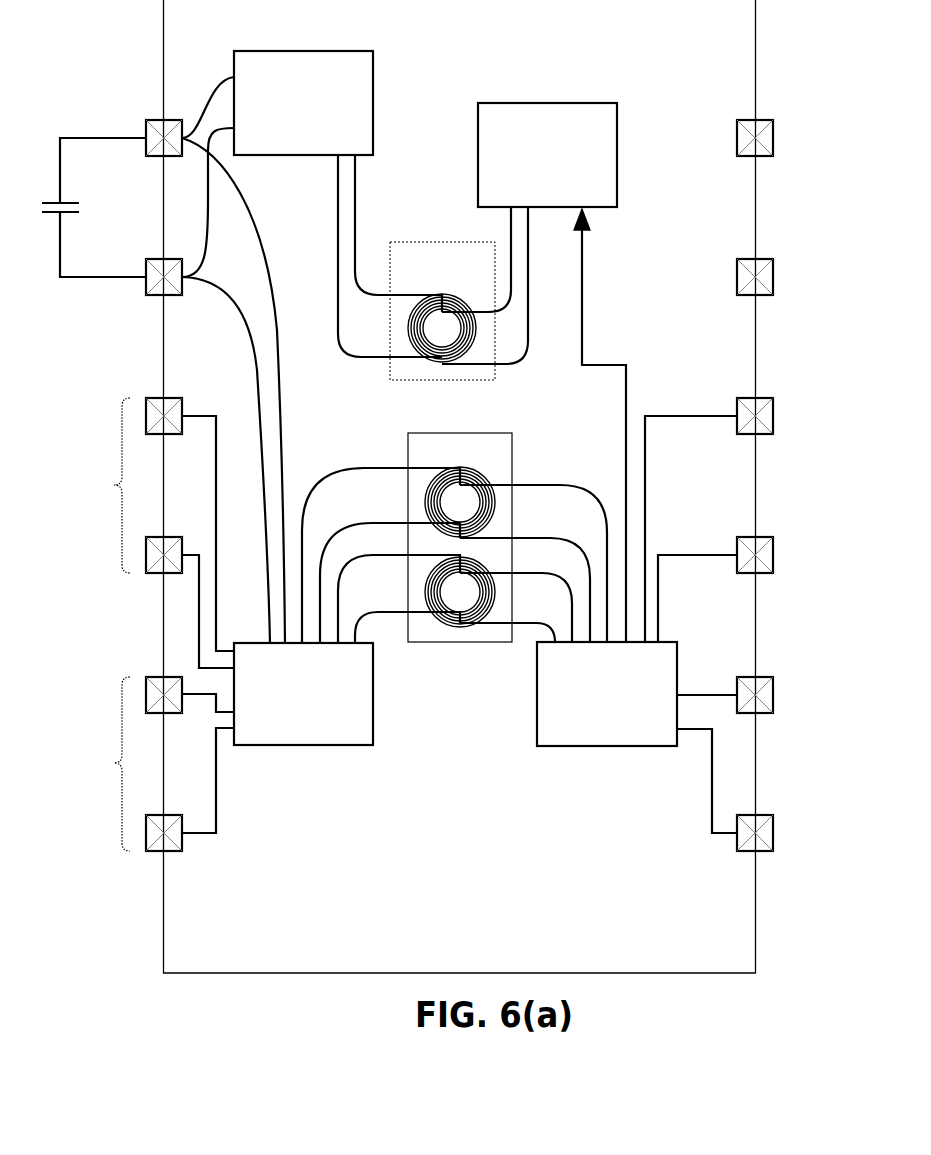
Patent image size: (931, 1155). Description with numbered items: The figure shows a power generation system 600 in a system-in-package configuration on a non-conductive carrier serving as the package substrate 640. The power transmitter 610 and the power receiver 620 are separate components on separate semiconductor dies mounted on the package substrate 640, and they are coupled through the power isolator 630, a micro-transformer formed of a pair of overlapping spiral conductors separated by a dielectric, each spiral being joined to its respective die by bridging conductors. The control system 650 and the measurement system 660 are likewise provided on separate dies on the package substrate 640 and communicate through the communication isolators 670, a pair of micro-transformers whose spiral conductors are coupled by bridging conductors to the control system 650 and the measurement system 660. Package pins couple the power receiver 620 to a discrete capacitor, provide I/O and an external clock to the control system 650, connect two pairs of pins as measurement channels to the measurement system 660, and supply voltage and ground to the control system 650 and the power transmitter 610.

The power generation system 600 is at (431, 530).
The power transmitter 610 is at (547, 155).
The power receiver 620 is at (303, 103).
The power isolator 630 is at (442, 311).
The package substrate 640 is at (460, 486).
The control system 650 is at (601, 694).
The measurement system 660 is at (297, 694).
The communication isolators 670 is at (460, 537).